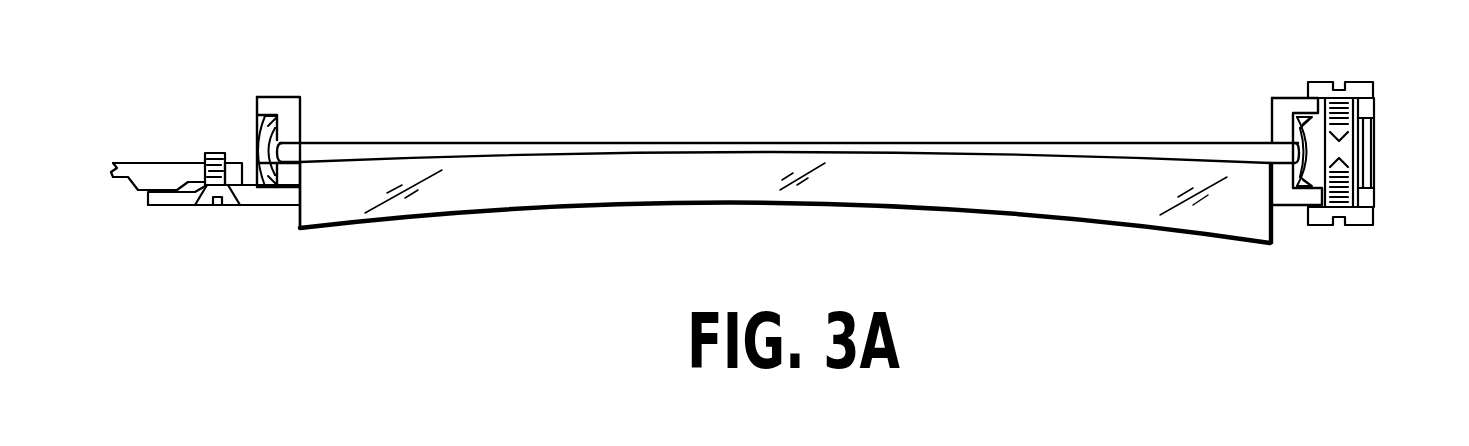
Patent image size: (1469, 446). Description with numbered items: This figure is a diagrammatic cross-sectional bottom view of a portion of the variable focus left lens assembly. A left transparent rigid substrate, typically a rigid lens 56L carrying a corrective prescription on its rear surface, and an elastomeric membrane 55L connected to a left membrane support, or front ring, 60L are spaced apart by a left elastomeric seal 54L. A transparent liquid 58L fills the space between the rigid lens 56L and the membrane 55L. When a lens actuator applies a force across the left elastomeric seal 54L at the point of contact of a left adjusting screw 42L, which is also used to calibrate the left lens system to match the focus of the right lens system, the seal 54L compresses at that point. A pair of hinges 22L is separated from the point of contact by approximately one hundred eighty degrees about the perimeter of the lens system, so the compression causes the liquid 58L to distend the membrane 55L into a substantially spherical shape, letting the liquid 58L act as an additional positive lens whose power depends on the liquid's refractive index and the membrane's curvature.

The hinges 22L is at (1367, 148).
The left adjusting screw 42L is at (232, 206).
The left elastomeric seal 54L is at (263, 148).
The elastomeric membrane 55L is at (918, 143).
The rigid lens 56L is at (1122, 206).
The transparent liquid 58L is at (1147, 152).
The left membrane support 60L is at (300, 108).